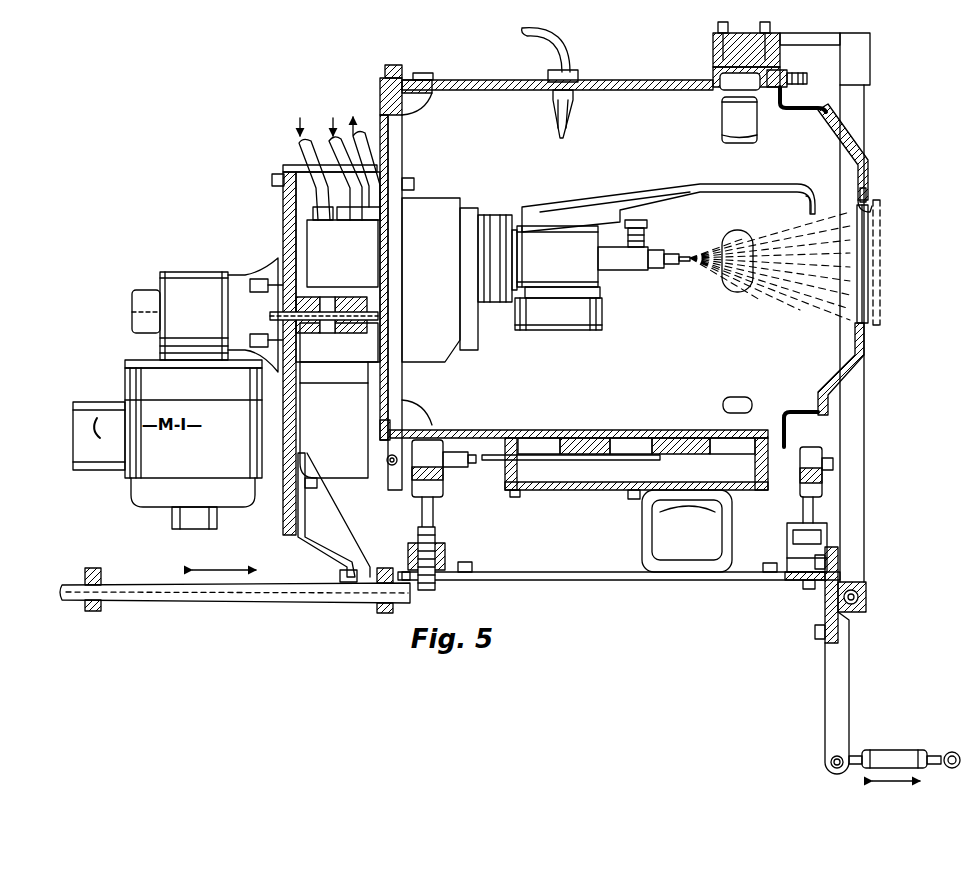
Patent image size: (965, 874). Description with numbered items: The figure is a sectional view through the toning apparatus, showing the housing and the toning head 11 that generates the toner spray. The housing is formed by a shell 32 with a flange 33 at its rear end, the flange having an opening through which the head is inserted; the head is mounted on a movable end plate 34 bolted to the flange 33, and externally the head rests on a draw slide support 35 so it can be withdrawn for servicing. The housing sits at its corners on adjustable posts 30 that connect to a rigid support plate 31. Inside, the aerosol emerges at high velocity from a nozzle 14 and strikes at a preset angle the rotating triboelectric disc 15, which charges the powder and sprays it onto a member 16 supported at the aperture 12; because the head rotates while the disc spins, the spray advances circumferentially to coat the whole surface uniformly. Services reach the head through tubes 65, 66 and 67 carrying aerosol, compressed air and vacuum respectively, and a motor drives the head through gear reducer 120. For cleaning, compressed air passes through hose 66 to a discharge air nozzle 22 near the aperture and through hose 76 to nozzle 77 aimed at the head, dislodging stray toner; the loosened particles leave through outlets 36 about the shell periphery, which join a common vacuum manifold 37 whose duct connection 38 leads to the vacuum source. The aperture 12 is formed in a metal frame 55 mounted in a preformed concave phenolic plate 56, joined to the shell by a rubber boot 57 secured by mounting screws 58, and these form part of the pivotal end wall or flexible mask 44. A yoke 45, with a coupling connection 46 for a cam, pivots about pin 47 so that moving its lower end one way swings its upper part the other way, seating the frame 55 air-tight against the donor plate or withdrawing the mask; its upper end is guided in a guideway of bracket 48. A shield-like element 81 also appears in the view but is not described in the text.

The toning head 11 is at (464, 194).
The aperture 12 is at (856, 258).
The nozzle 14 is at (590, 292).
The disc 15 is at (565, 330).
The member 16 is at (880, 236).
The discharge air nozzle 22 is at (812, 213).
The adjustable posts 30 is at (798, 490).
The support plate 31 is at (582, 582).
The shell 32 is at (516, 80).
The flange 33 is at (400, 147).
The end plate 34 is at (380, 95).
The draw slide support 35 is at (275, 604).
The outlets 36 is at (736, 91).
The vacuum manifold 37 is at (576, 472).
The duct connection 38 is at (665, 541).
The pivotal end wall 44 is at (886, 393).
The yoke 45 is at (866, 544).
The coupling connection 46 is at (902, 752).
The pin 47 is at (867, 599).
The bracket 48 is at (745, 35).
The frame 55 is at (870, 192).
The phenolic plate 56 is at (858, 146).
The rubber boot 57 is at (806, 116).
The mounting screws 58 is at (806, 78).
The tube 65 is at (312, 160).
The hose 66 is at (378, 180).
The tube 67 is at (380, 175).
The hose 76 is at (568, 62).
The nozzle 77 is at (555, 124).
The shield arm 81 is at (668, 195).
The gear reducer 120 is at (207, 272).